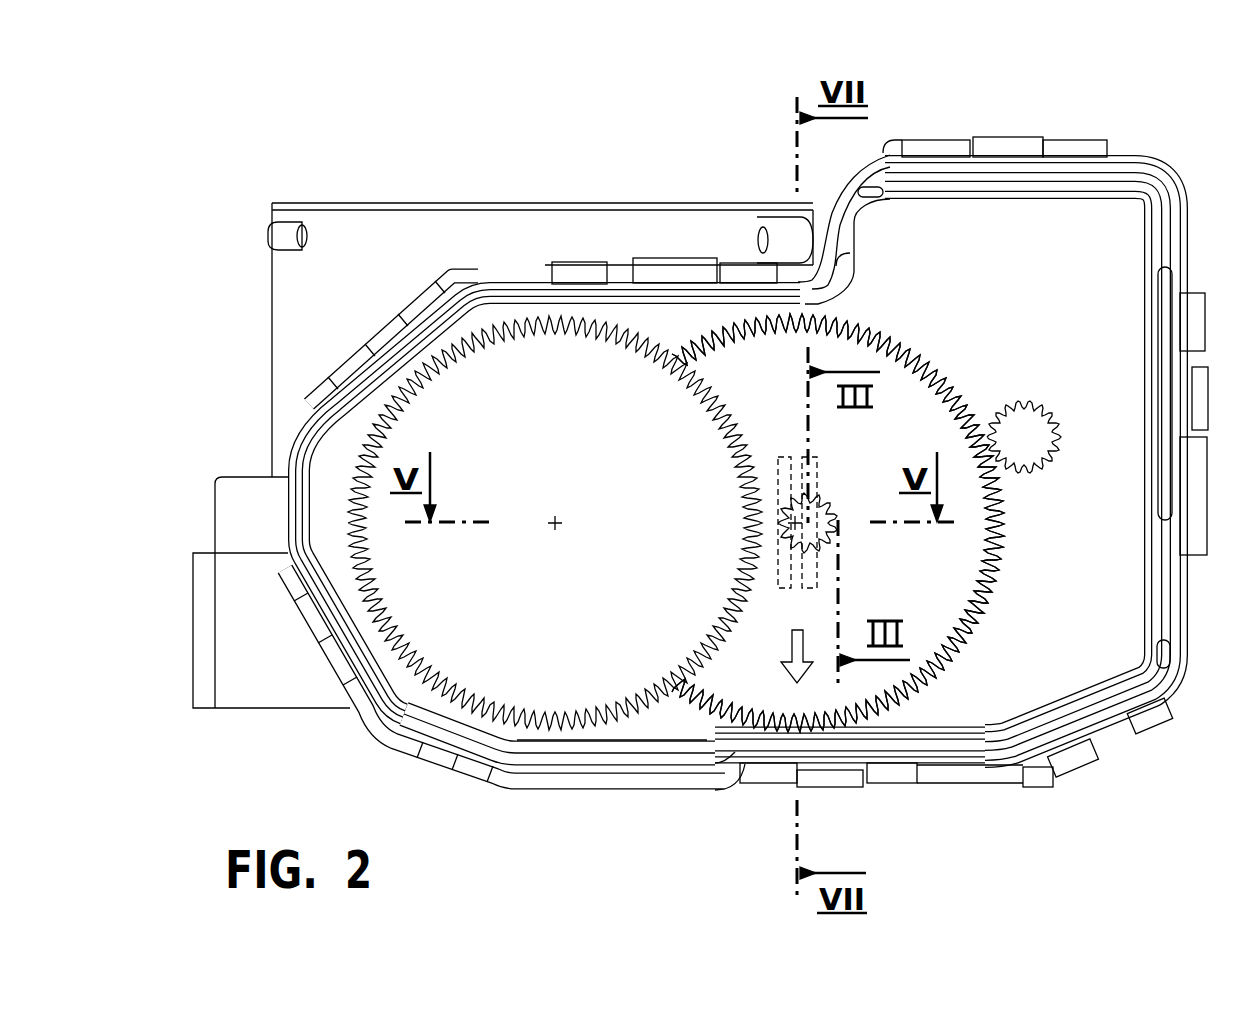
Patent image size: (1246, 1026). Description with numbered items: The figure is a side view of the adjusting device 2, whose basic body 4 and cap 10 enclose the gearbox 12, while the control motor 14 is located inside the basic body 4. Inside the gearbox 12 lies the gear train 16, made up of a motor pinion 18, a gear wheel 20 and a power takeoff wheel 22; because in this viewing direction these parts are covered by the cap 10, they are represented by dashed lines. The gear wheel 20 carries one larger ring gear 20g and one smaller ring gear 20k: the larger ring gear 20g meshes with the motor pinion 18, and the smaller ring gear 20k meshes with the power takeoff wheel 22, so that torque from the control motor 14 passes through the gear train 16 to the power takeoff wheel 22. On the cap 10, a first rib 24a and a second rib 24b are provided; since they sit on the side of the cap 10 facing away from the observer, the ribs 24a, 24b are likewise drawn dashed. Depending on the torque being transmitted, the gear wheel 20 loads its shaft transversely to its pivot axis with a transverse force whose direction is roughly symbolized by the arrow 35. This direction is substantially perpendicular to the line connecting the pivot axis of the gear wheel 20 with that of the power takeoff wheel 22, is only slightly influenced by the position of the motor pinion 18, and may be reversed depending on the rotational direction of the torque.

The adjusting device 2 is at (720, 100).
The basic body 4 is at (428, 218).
The cap 10 is at (337, 465).
The gearbox 12 is at (986, 688).
The control motor 14 is at (1046, 292).
The gear train 16 is at (687, 318).
The motor pinion 18 is at (1022, 458).
The gear wheel 20 is at (922, 408).
The larger ring gear 20g is at (996, 612).
The smaller ring gear 20k is at (832, 508).
The power takeoff wheel 22 is at (565, 703).
The first rib 24a is at (780, 590).
The second rib 24b is at (805, 590).
The arrow (transverse force) 35 is at (807, 672).